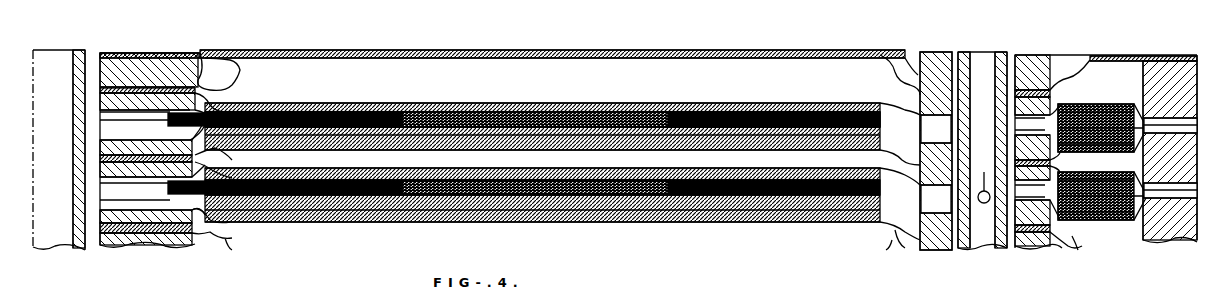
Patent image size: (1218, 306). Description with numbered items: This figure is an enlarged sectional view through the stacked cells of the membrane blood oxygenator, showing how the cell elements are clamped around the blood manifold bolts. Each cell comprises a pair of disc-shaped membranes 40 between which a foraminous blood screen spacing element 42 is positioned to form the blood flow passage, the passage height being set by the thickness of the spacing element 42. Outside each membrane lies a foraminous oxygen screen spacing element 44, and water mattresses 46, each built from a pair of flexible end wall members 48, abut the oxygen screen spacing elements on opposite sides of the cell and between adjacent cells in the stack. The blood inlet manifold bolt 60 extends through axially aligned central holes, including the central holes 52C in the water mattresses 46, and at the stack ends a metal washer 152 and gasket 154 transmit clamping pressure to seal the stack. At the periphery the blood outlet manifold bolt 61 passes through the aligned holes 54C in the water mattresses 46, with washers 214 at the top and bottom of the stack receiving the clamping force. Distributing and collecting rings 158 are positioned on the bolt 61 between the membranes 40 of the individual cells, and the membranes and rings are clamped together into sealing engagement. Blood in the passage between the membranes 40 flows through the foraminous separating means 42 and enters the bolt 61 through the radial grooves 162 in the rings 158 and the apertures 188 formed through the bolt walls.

The membranes 40 is at (295, 110).
The blood screen spacing element 42 is at (233, 110).
The oxygen screen spacing elements 44 is at (247, 110).
The water mattresses 46 is at (536, 123).
The flexible end wall members 48 is at (402, 53).
The central holes in water mattresses 52C is at (207, 73).
The holes in water mattresses 54C is at (912, 55).
The blood inlet manifold bolt 60 is at (78, 215).
The blood outlet manifold bolt 61 is at (982, 240).
The metal washer 152 is at (137, 58).
The gasket 154 is at (165, 52).
The distributing and collecting rings 158 is at (1030, 227).
The radial grooves 162 is at (1047, 117).
The apertures 188 is at (970, 128).
The washers 214 is at (1033, 67).